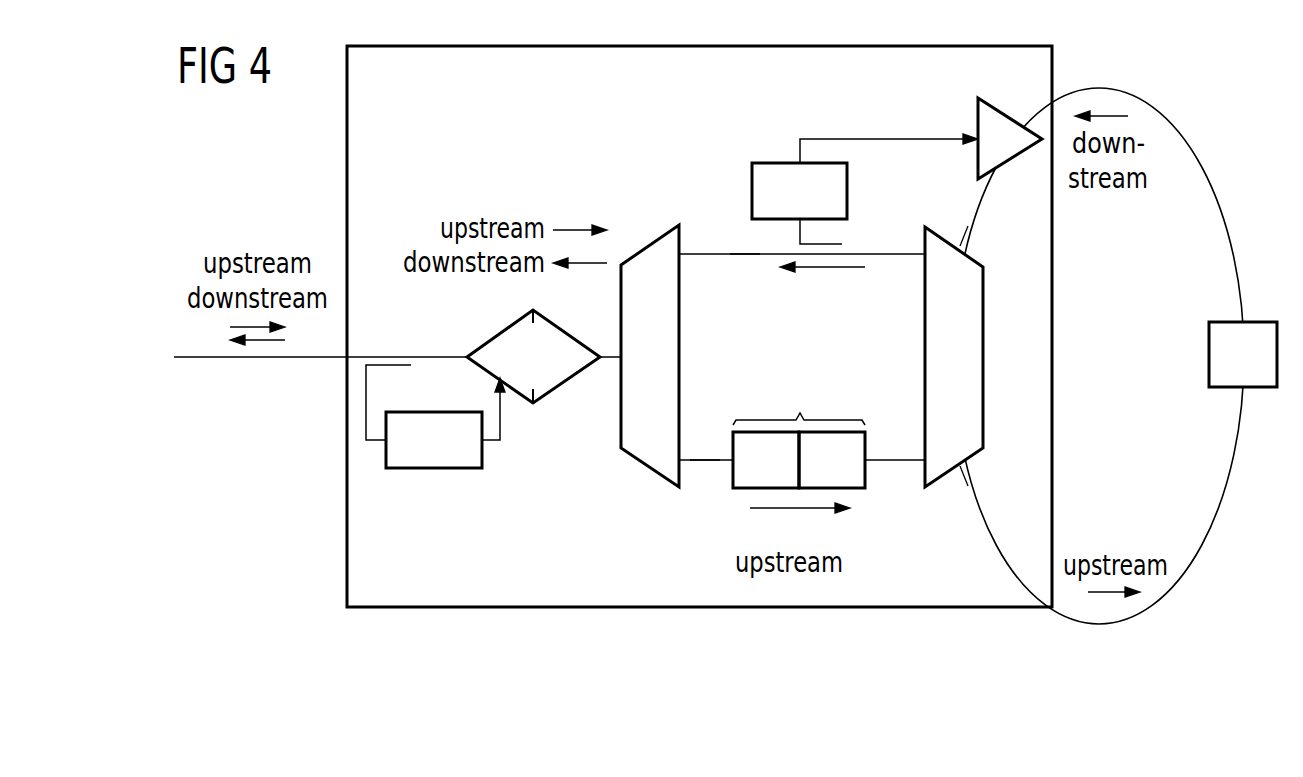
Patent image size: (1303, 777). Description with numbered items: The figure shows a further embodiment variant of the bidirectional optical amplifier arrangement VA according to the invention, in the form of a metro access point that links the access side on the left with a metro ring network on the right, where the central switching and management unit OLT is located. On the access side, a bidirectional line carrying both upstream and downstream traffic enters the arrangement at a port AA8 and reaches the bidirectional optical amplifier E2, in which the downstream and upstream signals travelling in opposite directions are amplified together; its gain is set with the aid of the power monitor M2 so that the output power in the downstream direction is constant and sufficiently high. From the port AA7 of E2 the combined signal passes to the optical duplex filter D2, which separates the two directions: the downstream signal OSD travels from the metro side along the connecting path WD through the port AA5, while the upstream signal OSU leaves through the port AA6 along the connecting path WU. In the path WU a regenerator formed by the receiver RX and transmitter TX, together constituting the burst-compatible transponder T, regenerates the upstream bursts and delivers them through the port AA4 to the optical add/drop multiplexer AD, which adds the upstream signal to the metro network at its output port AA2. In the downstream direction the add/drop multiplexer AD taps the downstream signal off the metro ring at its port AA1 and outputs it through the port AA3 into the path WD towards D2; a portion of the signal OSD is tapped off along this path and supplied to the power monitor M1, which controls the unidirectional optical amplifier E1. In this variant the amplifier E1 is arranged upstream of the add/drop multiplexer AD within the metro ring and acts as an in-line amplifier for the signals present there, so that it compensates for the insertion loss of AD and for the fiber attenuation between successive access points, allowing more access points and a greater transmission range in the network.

The bidirectional optical amplifier arrangement VA is at (699, 326).
The central switching and management unit OLT is at (1243, 354).
The unidirectional optical amplifier E1 is at (1010, 138).
The bidirectional optical amplifier E2 is at (533, 356).
The optical duplex filter D2 is at (650, 356).
The optical add/drop multiplexer AD is at (954, 357).
The power monitor M1 is at (865, 189).
The power monitor M2 is at (435, 416).
The receiver (of regenerator RxTx) RX is at (766, 460).
The transmitter (of regenerator RxTx) TX is at (832, 460).
The transponder T is at (800, 413).
The first connection port AA1 is at (960, 246).
The second connection port AA2 is at (960, 466).
The third connection port AA3 is at (923, 253).
The fourth connection port AA4 is at (922, 462).
The fifth connection port AA5 is at (682, 253).
The sixth connection port AA6 is at (682, 462).
The seventh connection port AA7 is at (618, 354).
The eighth connection port AA8 is at (470, 356).
The connecting path for the downstream signal WD is at (744, 255).
The connecting path for the upstream signal WU is at (699, 459).
The optical downstream signal OSD is at (822, 284).
The optical upstream signal OSU is at (800, 526).